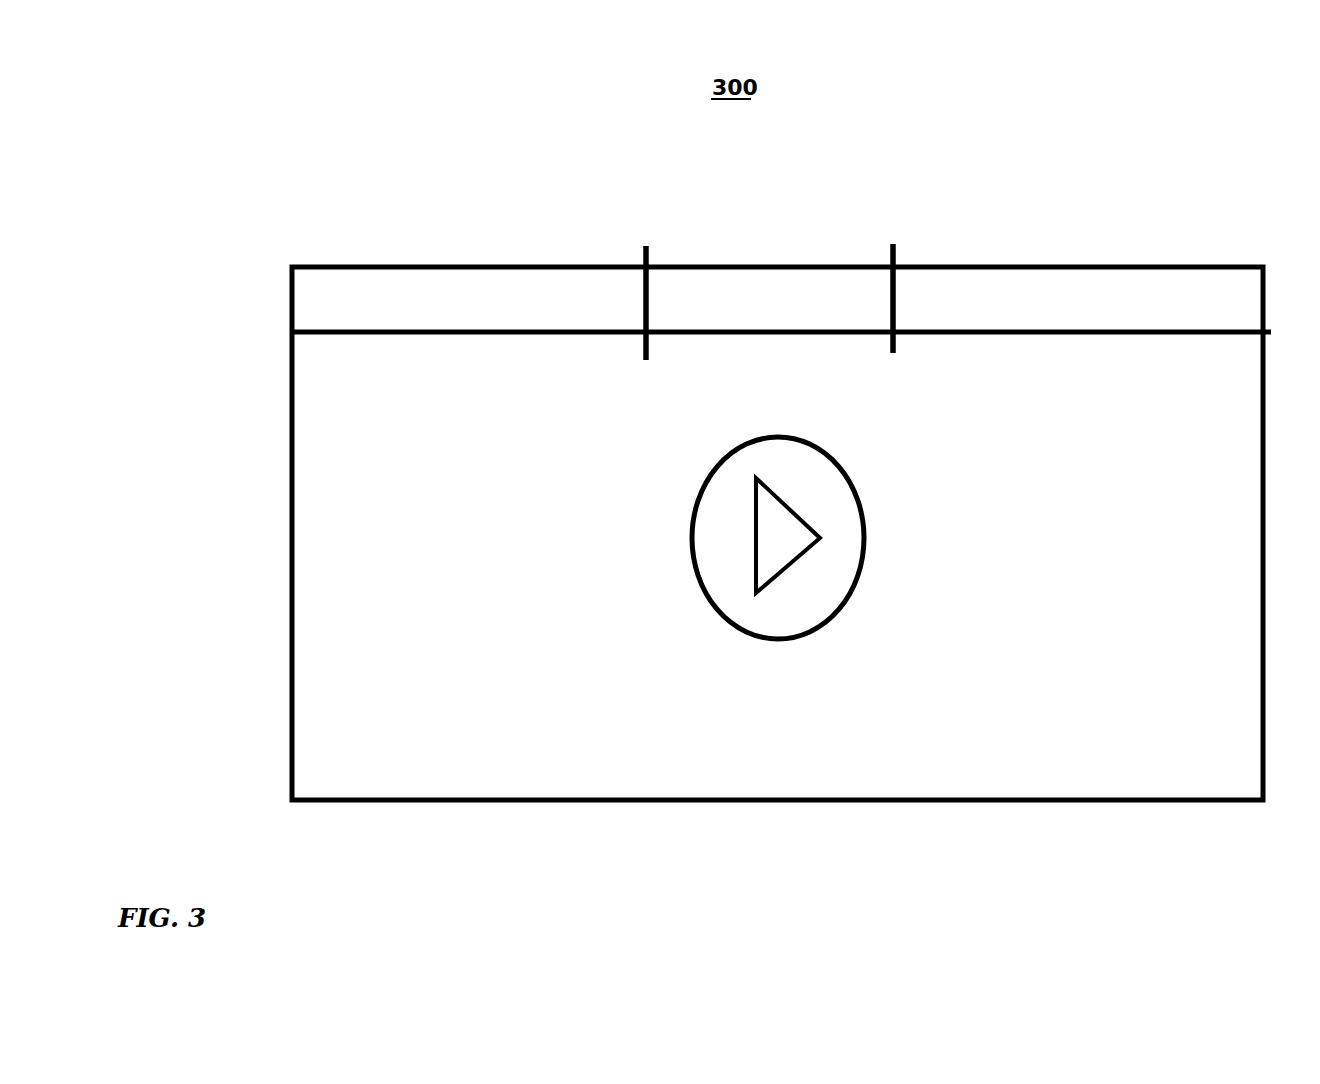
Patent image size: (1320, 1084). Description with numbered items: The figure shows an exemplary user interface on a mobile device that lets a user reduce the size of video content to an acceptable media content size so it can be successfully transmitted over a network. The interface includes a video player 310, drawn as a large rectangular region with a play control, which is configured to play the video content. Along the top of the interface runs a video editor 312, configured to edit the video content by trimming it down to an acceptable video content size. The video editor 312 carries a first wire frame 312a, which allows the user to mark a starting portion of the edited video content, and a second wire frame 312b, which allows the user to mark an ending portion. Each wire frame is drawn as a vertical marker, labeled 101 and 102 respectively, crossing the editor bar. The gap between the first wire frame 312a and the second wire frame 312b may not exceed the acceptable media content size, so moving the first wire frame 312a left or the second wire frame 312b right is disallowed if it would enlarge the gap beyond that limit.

The video player 310 is at (298, 503).
The video editor 312 is at (302, 303).
The first wire frame 312a is at (620, 247).
The second wire frame 312b is at (871, 233).
The first marker 101 is at (645, 252).
The second marker 102 is at (893, 246).